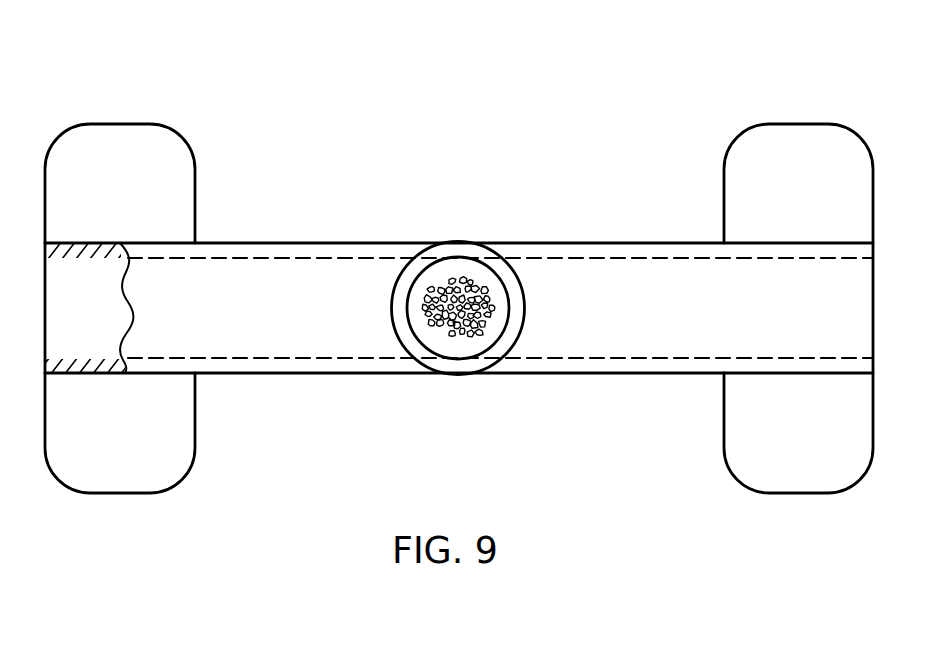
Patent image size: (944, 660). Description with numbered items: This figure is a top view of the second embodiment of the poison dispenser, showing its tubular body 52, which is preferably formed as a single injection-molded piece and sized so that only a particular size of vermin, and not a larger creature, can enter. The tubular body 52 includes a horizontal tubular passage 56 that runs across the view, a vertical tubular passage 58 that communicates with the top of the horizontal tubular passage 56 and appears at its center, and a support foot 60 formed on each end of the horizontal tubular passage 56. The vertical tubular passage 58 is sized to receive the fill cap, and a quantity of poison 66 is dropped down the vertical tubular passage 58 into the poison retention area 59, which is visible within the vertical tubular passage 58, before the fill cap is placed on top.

The tubular body 52 is at (453, 295).
The horizontal tubular passage 56 is at (658, 374).
The vertical tubular passage 58 is at (520, 278).
The poison retention area 59 is at (430, 280).
The support foot 60 is at (750, 150).
The poison 66 is at (478, 325).